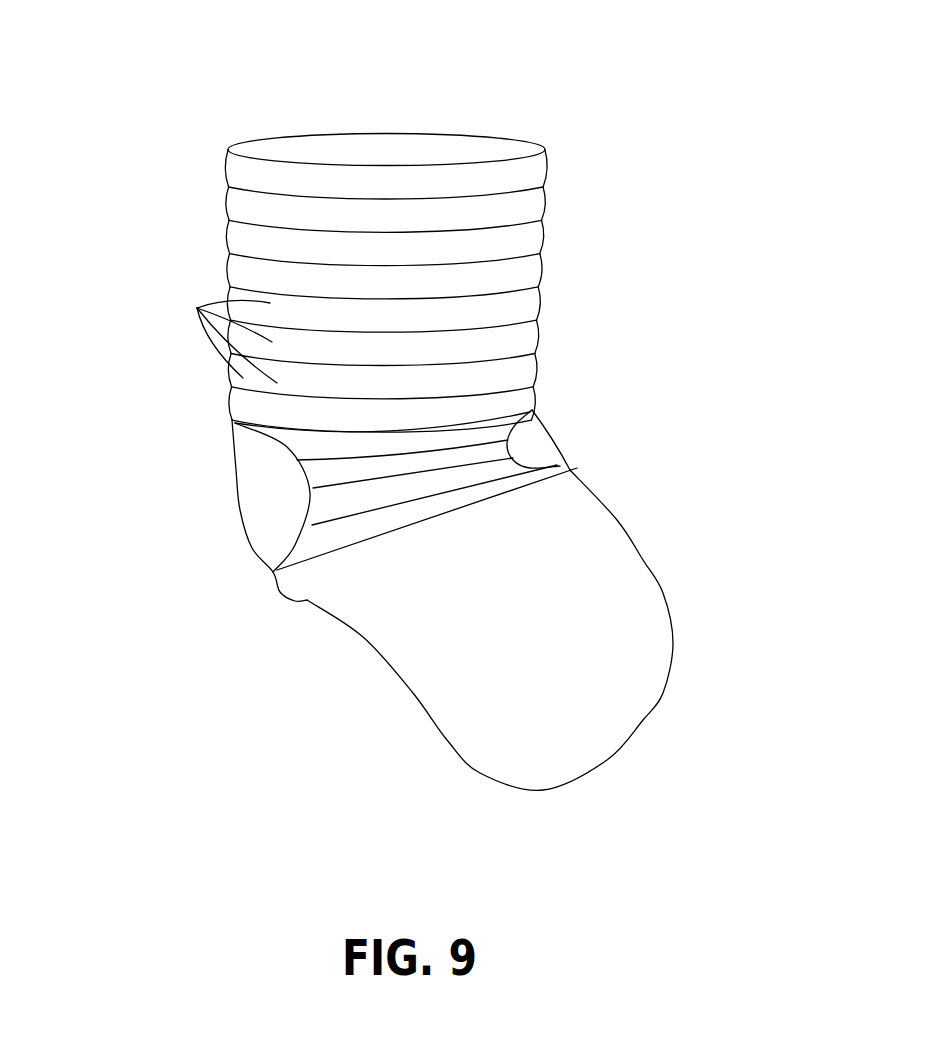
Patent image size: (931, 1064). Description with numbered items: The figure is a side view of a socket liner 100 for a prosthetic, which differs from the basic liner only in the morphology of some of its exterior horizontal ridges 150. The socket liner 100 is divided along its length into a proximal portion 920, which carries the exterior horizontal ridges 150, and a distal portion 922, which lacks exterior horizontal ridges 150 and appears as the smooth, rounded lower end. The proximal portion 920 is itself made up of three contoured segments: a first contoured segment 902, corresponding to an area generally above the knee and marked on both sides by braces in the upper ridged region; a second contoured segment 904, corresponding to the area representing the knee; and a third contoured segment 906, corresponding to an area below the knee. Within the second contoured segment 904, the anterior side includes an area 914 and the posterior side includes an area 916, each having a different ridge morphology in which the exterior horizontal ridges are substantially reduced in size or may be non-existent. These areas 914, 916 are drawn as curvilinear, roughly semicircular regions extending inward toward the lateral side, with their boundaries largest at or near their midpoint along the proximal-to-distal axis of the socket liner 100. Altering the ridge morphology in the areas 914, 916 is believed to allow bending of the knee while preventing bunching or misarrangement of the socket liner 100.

The socket liner 100 is at (480, 58).
The proximal portion 920 is at (375, 260).
The first contoured segment 902 is at (177, 155).
The exterior horizontal ridges 150 is at (217, 335).
The second contoured segment 904 is at (248, 568).
The area with different ridge morphology (anterior) 914 is at (245, 510).
The area with different ridge morphology (posterior) 916 is at (548, 416).
The third contoured segment 906 is at (425, 549).
The distal portion 922 is at (582, 682).